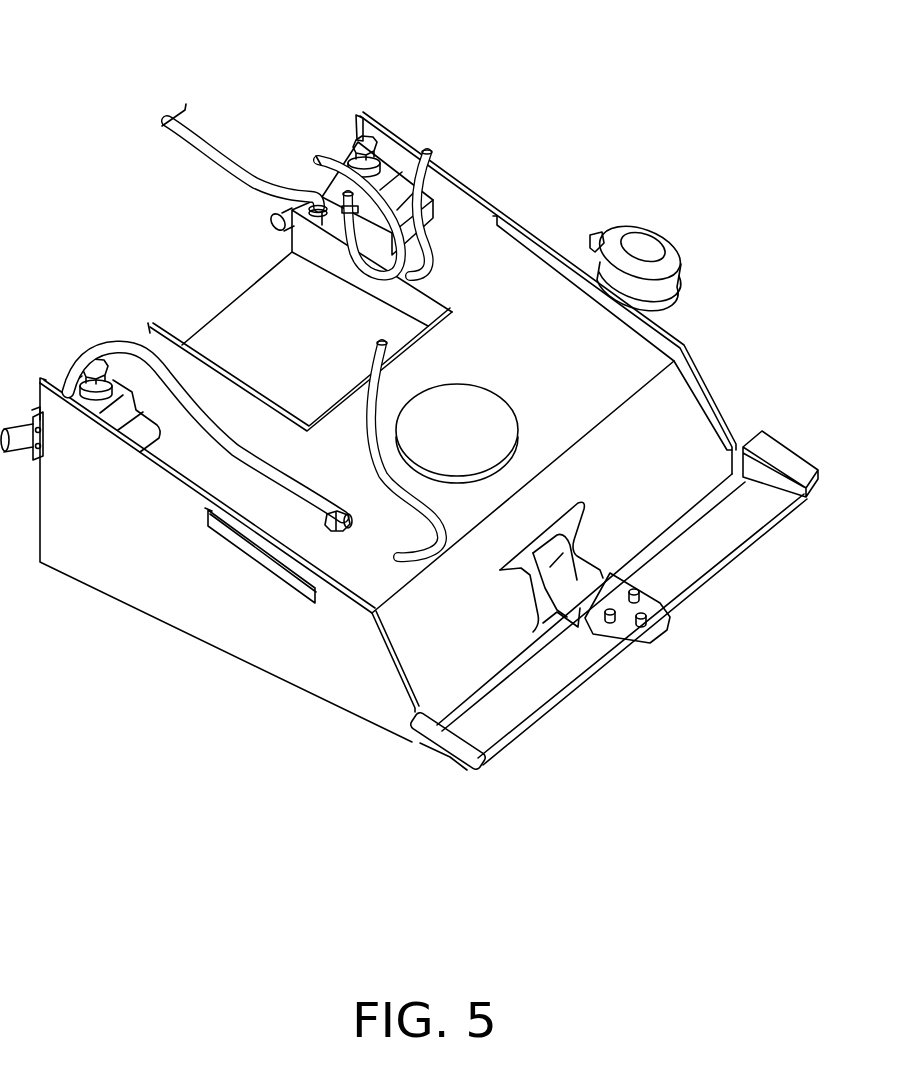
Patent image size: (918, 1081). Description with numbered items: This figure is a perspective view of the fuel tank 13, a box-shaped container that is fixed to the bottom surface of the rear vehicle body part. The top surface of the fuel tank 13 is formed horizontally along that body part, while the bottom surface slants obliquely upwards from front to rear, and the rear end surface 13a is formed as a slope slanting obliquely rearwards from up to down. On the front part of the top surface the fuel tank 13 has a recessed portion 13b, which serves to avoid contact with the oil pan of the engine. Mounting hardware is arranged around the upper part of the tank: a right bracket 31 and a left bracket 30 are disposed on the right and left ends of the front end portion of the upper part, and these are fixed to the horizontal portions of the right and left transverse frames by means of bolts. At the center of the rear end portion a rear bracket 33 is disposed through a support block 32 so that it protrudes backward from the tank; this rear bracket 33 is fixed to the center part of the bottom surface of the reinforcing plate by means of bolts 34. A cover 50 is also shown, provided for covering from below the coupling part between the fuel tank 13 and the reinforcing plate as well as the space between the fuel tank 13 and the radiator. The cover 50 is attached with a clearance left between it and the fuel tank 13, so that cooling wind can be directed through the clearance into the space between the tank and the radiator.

The fuel tank 13 is at (213, 677).
The rear end surface 13a is at (427, 637).
The recessed portion 13b is at (238, 322).
The left bracket 30 is at (60, 385).
The right bracket 31 is at (398, 167).
The support block 32 is at (575, 578).
The rear bracket 33 is at (657, 616).
The bolts 34 is at (610, 630).
The cover 50 is at (515, 713).